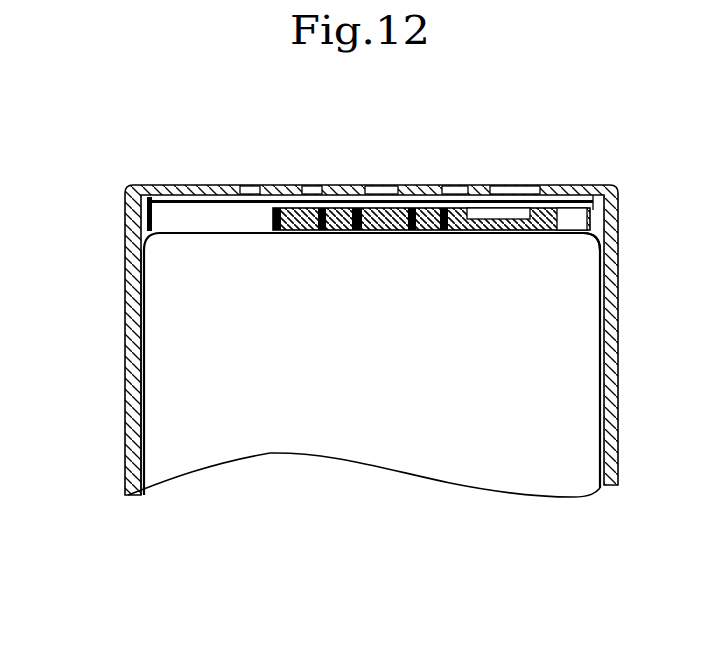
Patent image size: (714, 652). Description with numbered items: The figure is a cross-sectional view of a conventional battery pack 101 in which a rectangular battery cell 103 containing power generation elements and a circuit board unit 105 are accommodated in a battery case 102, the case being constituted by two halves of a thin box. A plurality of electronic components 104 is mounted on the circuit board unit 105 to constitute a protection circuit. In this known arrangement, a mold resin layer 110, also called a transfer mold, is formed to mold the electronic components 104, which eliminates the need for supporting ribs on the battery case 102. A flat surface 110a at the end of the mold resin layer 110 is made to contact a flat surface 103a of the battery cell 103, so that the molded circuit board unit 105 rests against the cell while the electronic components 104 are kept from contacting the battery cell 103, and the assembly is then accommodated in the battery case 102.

The battery pack 101 is at (108, 234).
The battery case 102 is at (160, 353).
The battery cell 103 is at (382, 474).
The flat surface of the battery cell 103a is at (532, 233).
The electronic components 104 is at (480, 210).
The circuit board unit 105 is at (258, 205).
The mold resin layer 110 is at (383, 230).
The flat surface of the mold resin layer 110a is at (508, 232).